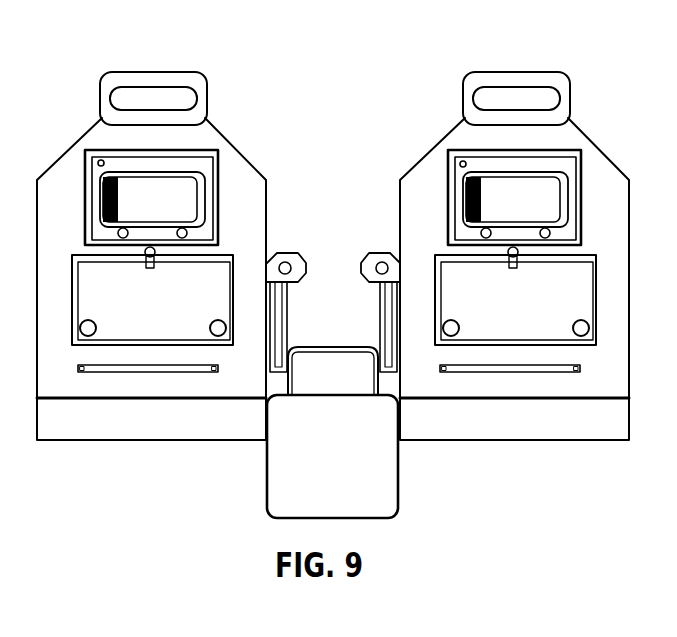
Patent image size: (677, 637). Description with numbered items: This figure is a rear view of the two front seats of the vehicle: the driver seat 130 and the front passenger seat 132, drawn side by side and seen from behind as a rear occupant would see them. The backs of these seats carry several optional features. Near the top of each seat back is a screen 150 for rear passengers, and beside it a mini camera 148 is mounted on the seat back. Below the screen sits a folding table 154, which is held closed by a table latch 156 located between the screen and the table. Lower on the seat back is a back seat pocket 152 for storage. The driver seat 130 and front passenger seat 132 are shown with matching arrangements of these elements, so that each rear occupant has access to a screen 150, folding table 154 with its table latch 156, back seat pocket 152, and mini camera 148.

The driver seat 130 is at (150, 428).
The front passenger seat 132 is at (522, 428).
The mini camera 148 is at (462, 158).
The screen 150 is at (547, 200).
The back seat pocket 152 is at (578, 372).
The folding table 154 is at (210, 273).
The table latch 156 is at (153, 250).